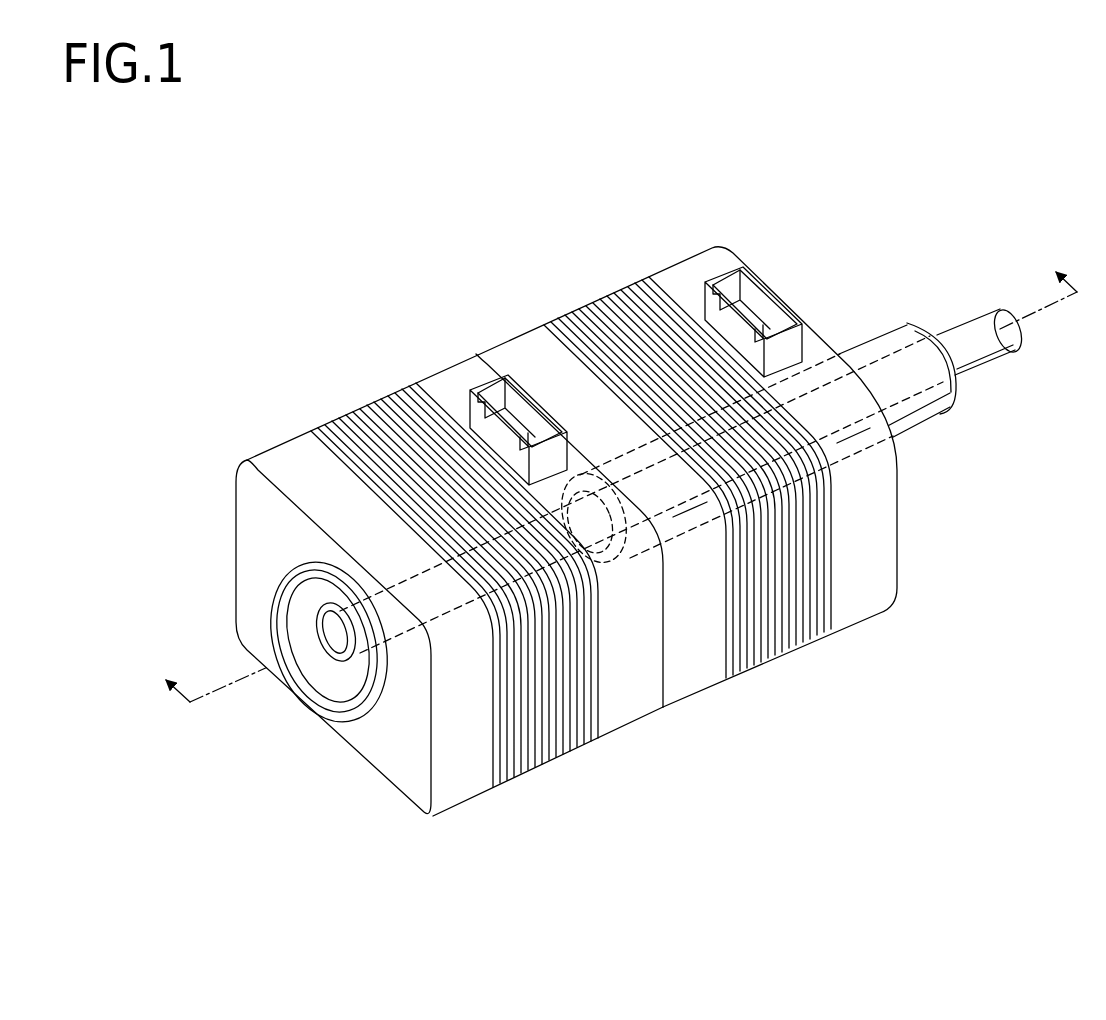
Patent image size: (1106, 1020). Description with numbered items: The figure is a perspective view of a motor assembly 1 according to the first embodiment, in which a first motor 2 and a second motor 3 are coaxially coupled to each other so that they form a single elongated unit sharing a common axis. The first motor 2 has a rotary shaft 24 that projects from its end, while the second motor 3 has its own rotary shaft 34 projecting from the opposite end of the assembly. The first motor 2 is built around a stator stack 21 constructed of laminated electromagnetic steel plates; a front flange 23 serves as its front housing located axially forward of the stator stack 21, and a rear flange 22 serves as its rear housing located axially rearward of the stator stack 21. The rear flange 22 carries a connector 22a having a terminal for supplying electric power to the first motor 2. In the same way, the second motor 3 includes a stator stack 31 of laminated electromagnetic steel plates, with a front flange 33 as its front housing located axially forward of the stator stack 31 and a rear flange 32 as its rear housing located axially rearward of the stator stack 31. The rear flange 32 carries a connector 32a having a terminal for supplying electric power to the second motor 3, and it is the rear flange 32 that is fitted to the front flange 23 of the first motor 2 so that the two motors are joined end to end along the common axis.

The motor assembly 1 is at (322, 280).
The first motor 2 is at (605, 280).
The second motor 3 is at (344, 396).
The stator stack 21 is at (773, 640).
The rear flange 22 is at (853, 600).
The connector 22a is at (753, 307).
The front flange 23 is at (695, 673).
The rotary shaft 24 is at (865, 356).
The stator stack 31 is at (547, 740).
The rear flange 32 is at (625, 705).
The connector 32a is at (521, 413).
The front flange 33 is at (460, 780).
The rotary shaft 34 is at (972, 332).